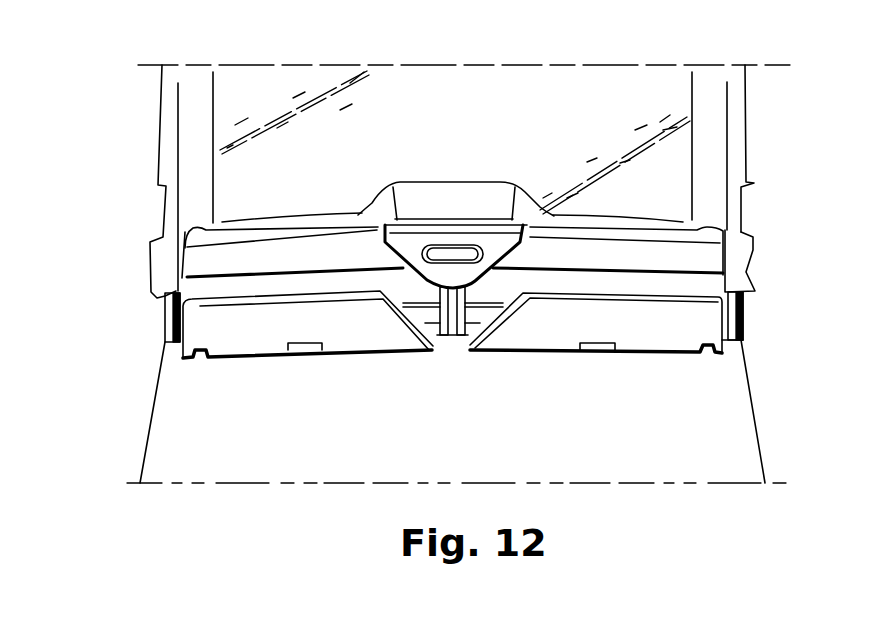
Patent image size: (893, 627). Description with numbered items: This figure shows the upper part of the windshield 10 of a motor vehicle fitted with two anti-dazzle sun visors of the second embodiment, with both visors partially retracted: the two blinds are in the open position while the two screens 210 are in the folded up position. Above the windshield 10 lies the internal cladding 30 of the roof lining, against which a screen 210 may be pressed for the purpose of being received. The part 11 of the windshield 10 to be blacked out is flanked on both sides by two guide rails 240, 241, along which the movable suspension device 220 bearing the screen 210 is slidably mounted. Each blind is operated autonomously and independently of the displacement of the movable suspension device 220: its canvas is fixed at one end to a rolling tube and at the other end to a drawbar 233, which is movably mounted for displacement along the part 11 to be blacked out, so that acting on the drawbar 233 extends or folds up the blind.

The windshield 10 is at (143, 443).
The part to be blacked out 11 is at (247, 288).
The internal cladding 30 is at (553, 117).
The screen 210 is at (660, 363).
The movable suspension device 220 is at (723, 262).
The drawbar 233 is at (732, 270).
The guide rail 240 is at (393, 298).
The guide rail 241 is at (163, 304).